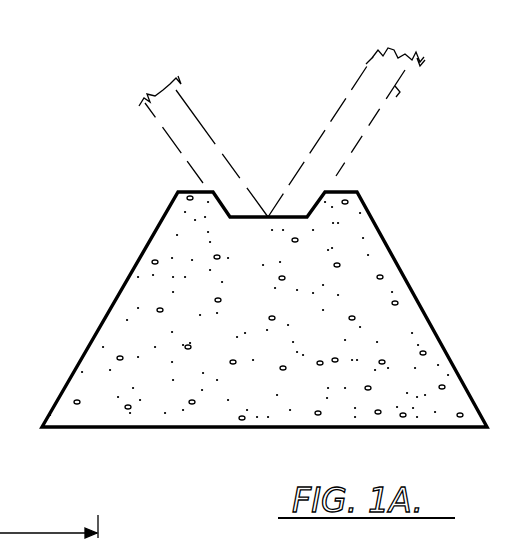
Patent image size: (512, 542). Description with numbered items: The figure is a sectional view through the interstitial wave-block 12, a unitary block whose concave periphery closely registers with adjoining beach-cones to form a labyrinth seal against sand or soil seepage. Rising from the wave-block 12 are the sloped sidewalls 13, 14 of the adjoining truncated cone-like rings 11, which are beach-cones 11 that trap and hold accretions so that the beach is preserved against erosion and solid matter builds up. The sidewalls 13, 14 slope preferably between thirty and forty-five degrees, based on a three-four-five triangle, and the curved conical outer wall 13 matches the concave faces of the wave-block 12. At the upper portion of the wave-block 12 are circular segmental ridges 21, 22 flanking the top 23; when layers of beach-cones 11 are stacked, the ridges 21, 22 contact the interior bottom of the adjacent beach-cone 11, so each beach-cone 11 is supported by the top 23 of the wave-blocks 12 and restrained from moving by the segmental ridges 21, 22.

The truncated cone-like ring 11 is at (183, 93).
The interstitial block 12 is at (117, 297).
The sidewall 13 is at (350, 95).
The sidewall 14 is at (142, 106).
The circular segmental ridge 21 is at (193, 190).
The circular segmental ridge 22 is at (344, 192).
The top of wave-block 23 is at (268, 215).